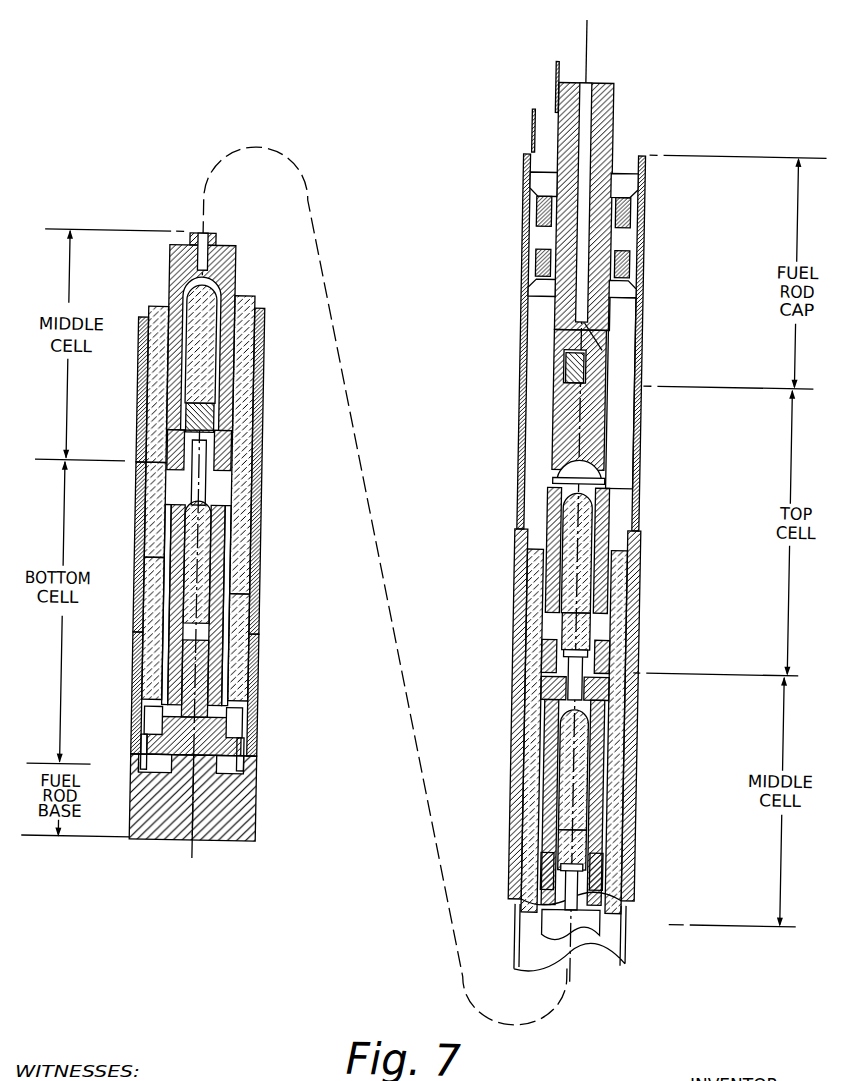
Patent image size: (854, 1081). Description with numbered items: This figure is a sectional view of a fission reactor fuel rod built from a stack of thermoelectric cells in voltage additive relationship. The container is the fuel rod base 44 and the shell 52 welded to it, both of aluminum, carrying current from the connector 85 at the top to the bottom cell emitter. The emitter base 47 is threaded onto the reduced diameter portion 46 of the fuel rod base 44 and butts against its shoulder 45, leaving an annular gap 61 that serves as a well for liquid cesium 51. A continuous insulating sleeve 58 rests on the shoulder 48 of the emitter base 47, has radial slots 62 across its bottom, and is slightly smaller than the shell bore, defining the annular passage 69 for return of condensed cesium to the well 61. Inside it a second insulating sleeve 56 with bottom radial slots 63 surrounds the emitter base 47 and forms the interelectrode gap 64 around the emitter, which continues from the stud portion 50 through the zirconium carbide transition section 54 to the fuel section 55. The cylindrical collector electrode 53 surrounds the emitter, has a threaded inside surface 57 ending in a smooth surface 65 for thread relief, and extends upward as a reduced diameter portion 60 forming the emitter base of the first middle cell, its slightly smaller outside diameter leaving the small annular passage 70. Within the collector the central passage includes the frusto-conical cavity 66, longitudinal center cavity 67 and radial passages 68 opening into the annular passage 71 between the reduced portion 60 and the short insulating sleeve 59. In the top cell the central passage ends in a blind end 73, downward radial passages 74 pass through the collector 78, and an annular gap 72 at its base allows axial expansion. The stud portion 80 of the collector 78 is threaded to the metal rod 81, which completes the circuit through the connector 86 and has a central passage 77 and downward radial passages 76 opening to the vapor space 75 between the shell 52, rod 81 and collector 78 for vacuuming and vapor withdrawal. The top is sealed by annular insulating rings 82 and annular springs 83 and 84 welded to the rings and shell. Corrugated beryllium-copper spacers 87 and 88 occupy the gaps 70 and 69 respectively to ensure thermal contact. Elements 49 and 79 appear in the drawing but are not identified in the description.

The fuel rod base 44 is at (272, 830).
The shoulder 45 is at (152, 778).
The reduced diameter portion 46 is at (185, 775).
The emitter base 47 is at (160, 762).
The shoulder 48 is at (156, 746).
The bottom cell end block 49 is at (165, 728).
The stud portion 50 is at (158, 712).
The liquid cesium 51 is at (268, 777).
The shell 52 is at (150, 672).
The collector electrode 53 is at (152, 552).
The transition section 54 is at (194, 645).
The fuel section 55 is at (190, 577).
The second insulating sleeve 56 is at (177, 661).
The threaded inside surface 57 is at (162, 528).
The continuous insulating sleeve 58 is at (162, 600).
The short insulating sleeve 59 is at (160, 466).
The reduced diameter portion 60 is at (150, 447).
The annular gap 61 is at (258, 764).
The radial slots 62 is at (257, 745).
The bottom radial slots 63 is at (240, 720).
The interelectrode gap 64 is at (258, 666).
The smooth surface 65 is at (230, 522).
The frusto-conical cavity 66 is at (214, 506).
The longitudinal center cavity 67 is at (215, 472).
The radial passages 68 is at (238, 455).
The annular passage 69 is at (268, 570).
The small annular passage 70 is at (250, 533).
The annular passage 71 is at (258, 438).
The annular gap 72 is at (630, 636).
The blind end 73 is at (600, 478).
The radial passages 74 is at (558, 514).
The vapor space 75 is at (634, 316).
The radial passages 76 is at (609, 352).
The central passage 77 is at (592, 122).
The top collector 78 is at (560, 462).
The key 79 is at (572, 382).
The stud portion 80 is at (570, 360).
The metal rod 81 is at (560, 100).
The annular insulating rings 82 is at (540, 228).
The annular springs 83 is at (533, 270).
The annular springs 84 is at (533, 190).
The connector 85 is at (534, 120).
The connector 86 is at (557, 68).
The corrugated beryllium-copper spacer 87 is at (645, 952).
The corrugated beryllium-copper spacer 88 is at (645, 926).